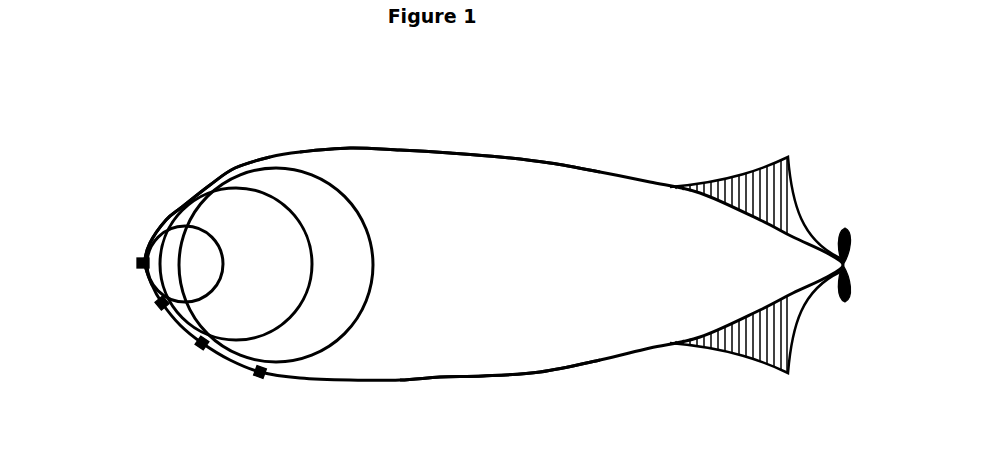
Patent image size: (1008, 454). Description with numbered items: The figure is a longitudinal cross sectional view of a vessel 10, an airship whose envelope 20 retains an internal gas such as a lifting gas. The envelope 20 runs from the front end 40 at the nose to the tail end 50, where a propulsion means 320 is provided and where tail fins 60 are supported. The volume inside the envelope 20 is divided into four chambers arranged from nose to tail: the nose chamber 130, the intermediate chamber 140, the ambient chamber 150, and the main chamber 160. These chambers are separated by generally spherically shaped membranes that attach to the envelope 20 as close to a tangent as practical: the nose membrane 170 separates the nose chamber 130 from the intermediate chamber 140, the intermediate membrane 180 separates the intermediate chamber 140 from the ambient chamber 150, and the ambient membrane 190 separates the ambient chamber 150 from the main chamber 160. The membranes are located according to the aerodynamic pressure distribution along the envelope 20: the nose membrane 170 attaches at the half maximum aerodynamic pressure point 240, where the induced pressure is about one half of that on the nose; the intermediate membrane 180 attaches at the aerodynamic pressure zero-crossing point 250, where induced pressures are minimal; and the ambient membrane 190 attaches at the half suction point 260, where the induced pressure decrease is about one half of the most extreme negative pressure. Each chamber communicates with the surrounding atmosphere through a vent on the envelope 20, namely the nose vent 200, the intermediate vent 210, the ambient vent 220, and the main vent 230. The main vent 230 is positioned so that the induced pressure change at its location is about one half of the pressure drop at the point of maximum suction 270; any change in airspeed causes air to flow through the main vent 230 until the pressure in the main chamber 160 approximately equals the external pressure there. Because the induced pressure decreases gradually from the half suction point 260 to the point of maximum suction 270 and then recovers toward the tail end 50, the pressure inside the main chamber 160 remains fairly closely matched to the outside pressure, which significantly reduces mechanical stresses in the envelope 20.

The vessel 10 is at (585, 382).
The envelope 20 is at (484, 380).
The front end 40 is at (141, 271).
The tail end 50 is at (832, 244).
The tail fins 60 is at (720, 208).
The nose chamber 130 is at (211, 272).
The intermediate chamber 140 is at (284, 278).
The ambient chamber 150 is at (330, 265).
The main chamber 160 is at (500, 265).
The nose membrane 170 is at (222, 285).
The intermediate membrane 180 is at (305, 310).
The ambient membrane 190 is at (374, 298).
The nose vent 200 is at (130, 263).
The intermediate vent 210 is at (155, 312).
The ambient vent 220 is at (198, 353).
The main vent 230 is at (257, 384).
The half maximum aerodynamic pressure point 240 is at (153, 236).
The aerodynamic pressure zero-crossing point 250 is at (182, 206).
The half suction point 260 is at (235, 167).
The point of maximum suction 270 is at (350, 147).
The propulsion means 320 is at (842, 310).